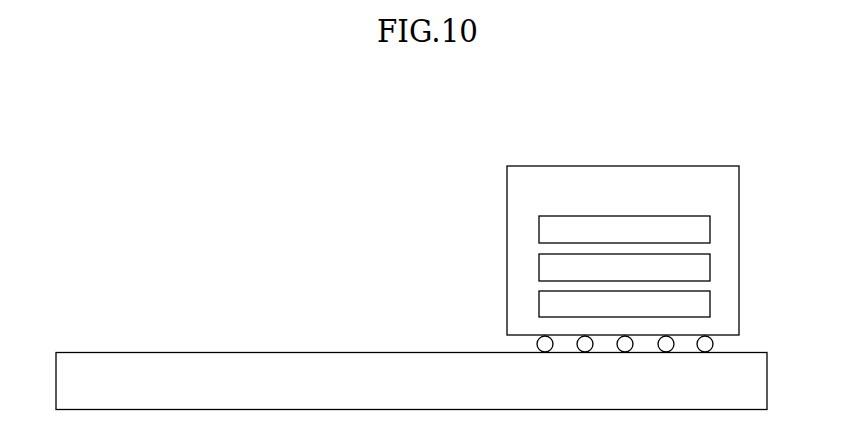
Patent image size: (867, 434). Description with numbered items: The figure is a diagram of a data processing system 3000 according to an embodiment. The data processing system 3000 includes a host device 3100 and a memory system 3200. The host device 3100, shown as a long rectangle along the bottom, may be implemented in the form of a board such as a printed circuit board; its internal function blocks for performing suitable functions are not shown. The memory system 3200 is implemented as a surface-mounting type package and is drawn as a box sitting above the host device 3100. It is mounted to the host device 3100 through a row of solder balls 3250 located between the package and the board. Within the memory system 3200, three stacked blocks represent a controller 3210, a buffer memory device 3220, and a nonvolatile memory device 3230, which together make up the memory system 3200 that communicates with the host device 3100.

The data processing system 3000 is at (119, 107).
The host device 3100 is at (411, 381).
The memory system 3200 is at (623, 250).
The controller 3210 is at (624, 231).
The buffer memory device 3220 is at (624, 269).
The nonvolatile memory device 3230 is at (624, 306).
The solder balls 3250 is at (725, 343).